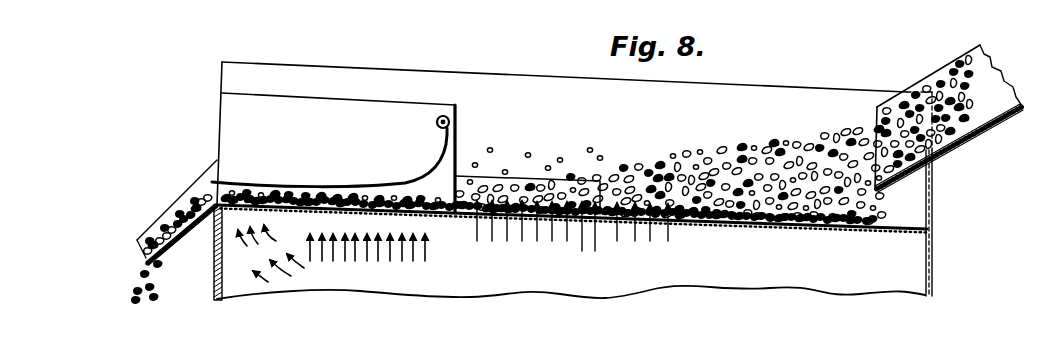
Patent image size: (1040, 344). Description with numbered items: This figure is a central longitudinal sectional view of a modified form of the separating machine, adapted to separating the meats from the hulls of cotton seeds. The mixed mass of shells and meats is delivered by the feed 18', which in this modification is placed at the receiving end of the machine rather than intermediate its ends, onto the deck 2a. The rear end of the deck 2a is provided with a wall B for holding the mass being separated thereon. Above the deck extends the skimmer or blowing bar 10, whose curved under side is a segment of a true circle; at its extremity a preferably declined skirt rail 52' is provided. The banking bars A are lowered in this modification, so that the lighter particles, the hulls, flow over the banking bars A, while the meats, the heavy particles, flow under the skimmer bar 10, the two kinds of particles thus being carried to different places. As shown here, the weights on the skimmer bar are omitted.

The skimmer bar 10 is at (311, 185).
The skirt rail 52' is at (174, 231).
The banking bars A is at (516, 177).
The deck 2a is at (697, 221).
The feed 18' is at (931, 118).
The wall B is at (933, 193).